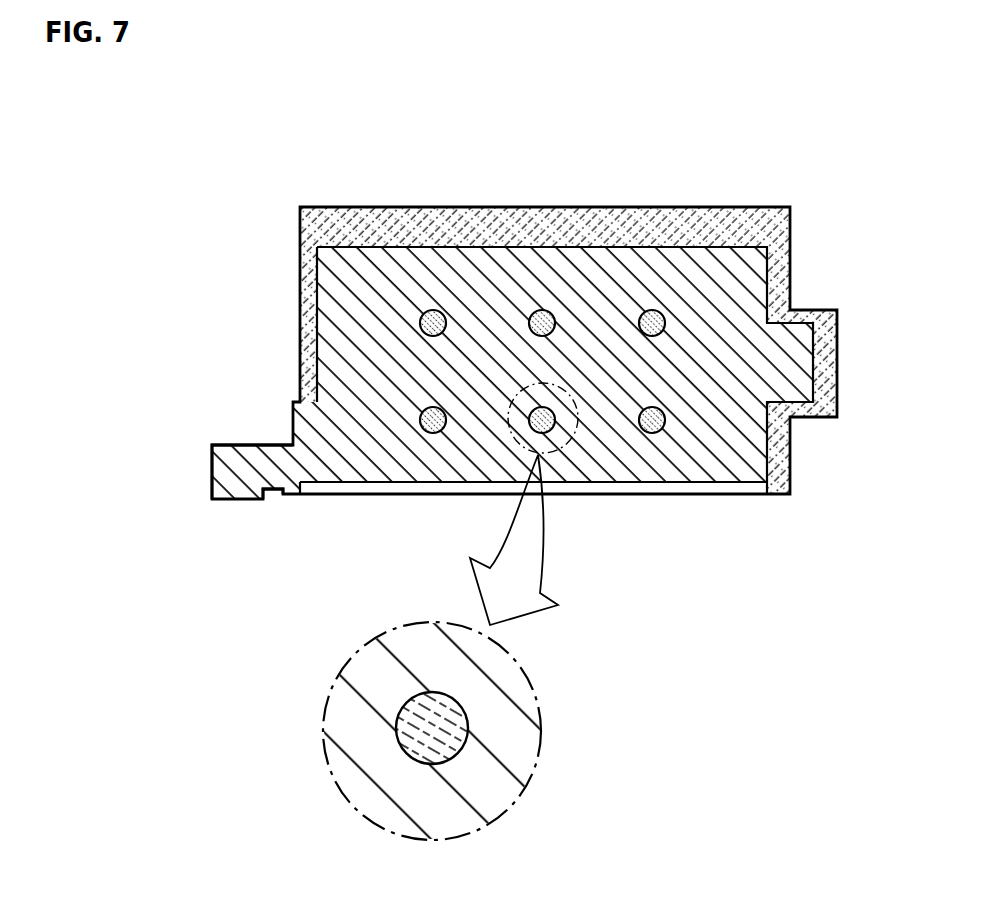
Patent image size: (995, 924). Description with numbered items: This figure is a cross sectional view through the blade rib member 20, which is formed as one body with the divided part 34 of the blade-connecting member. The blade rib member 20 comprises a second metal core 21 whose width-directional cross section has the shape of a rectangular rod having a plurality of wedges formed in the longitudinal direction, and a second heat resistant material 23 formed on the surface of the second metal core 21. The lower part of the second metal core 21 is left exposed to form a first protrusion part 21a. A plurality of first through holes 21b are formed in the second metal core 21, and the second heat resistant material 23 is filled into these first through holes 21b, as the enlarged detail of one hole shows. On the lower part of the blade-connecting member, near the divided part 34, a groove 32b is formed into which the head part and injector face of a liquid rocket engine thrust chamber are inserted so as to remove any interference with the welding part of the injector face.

The blade rib member 20 is at (503, 203).
The second heat resistant material 23 is at (318, 231).
The second metal core 21 is at (340, 338).
The first through holes 21b is at (663, 332).
The first protrusion part 21a is at (668, 488).
The divided part 34 is at (209, 468).
The groove 32b is at (280, 491).